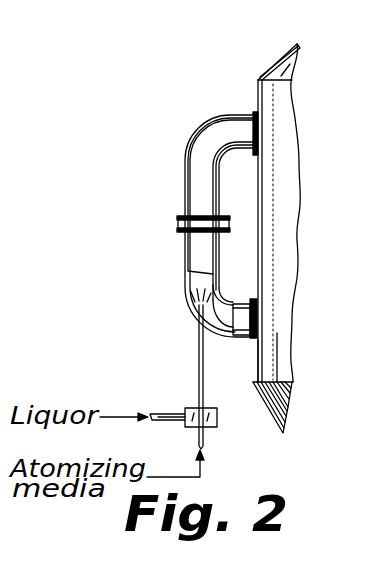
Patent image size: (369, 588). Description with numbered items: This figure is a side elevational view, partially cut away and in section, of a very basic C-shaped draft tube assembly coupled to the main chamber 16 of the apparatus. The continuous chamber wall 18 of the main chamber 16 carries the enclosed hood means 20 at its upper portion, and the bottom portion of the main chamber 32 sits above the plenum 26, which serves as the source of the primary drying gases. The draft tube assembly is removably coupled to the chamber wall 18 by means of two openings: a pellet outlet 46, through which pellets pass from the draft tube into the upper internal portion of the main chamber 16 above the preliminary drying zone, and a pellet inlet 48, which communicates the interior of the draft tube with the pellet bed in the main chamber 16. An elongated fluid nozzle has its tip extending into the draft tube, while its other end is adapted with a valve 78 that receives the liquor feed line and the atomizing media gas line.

The main chamber 16 is at (279, 202).
The chamber wall 18 is at (274, 97).
The hood means 20 is at (276, 67).
The plenum 26 is at (284, 401).
The bottom portion of the main chamber 32 is at (258, 361).
The pellet outlet 46 is at (278, 124).
The pellet inlet 48 is at (248, 320).
The valve 78 is at (208, 424).